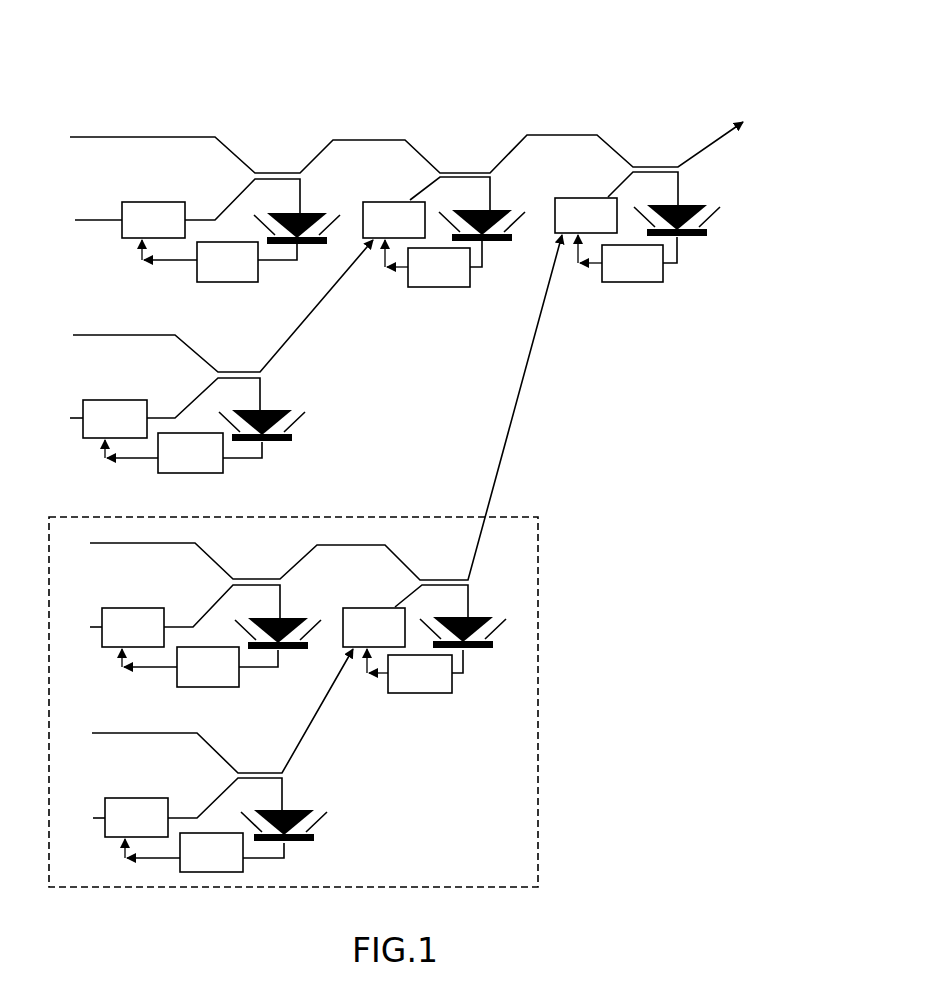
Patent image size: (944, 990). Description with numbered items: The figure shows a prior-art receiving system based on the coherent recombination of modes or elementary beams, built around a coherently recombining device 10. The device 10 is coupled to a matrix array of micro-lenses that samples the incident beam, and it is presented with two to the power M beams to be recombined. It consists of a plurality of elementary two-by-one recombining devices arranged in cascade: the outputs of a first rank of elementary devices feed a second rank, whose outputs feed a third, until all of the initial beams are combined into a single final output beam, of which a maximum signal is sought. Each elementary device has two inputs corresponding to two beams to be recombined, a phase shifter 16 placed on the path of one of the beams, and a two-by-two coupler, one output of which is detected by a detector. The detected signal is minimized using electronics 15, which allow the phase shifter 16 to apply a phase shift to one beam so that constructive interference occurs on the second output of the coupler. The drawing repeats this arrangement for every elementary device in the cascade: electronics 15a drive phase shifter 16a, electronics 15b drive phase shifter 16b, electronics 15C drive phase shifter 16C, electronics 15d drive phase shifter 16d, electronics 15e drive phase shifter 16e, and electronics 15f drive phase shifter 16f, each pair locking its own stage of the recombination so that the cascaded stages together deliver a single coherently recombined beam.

The coherently recombining device 10 is at (518, 98).
The electronics 15 is at (242, 273).
The phase shifter 16 is at (167, 231).
The electronics 15a is at (422, 279).
The phase shifter 16a is at (377, 231).
The electronics 15b is at (615, 275).
The phase shifter 16b is at (569, 227).
The electronics 15C is at (172, 464).
The phase shifter 16C is at (97, 430).
The electronics 15d is at (191, 678).
The phase shifter 16d is at (116, 638).
The electronics 15e is at (403, 685).
The phase shifter 16e is at (357, 638).
The electronics 15f is at (197, 863).
The phase shifter 16f is at (122, 828).